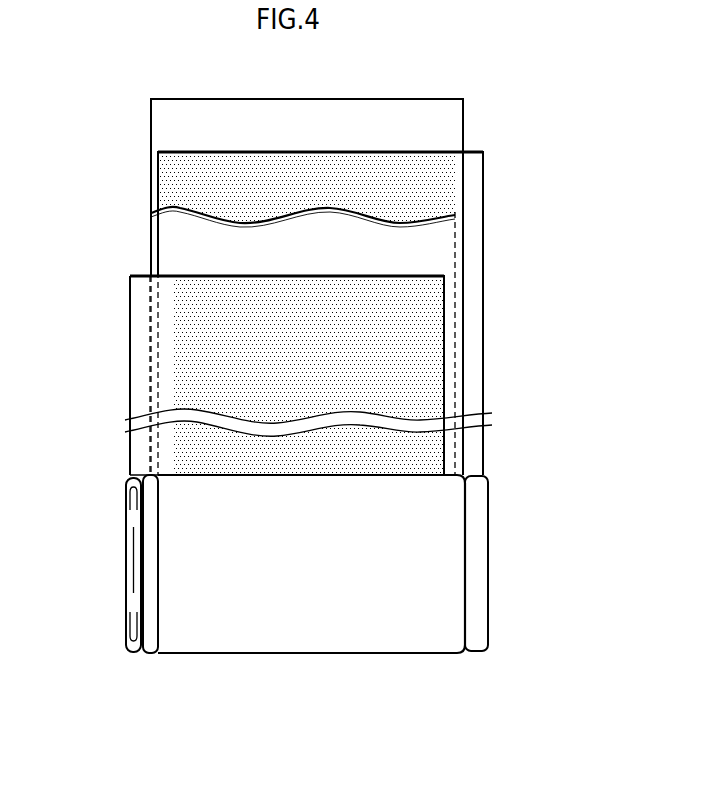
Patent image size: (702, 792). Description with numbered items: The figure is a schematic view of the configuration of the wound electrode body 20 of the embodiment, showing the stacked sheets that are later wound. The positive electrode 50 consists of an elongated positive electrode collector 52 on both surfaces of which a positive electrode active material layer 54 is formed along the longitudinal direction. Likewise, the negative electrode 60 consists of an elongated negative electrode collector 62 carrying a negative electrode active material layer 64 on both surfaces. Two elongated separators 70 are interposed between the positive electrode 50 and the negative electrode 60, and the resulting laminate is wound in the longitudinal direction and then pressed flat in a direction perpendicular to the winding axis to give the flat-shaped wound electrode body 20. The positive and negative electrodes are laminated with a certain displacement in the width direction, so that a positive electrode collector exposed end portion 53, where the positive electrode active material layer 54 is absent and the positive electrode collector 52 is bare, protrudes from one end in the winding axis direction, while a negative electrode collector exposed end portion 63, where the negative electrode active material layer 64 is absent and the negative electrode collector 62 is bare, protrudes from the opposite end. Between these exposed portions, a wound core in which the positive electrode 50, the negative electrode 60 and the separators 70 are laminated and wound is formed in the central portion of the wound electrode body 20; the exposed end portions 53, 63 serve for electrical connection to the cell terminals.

The wound electrode body 20 is at (364, 633).
The positive electrode 50 is at (128, 342).
The positive electrode collector 52 is at (148, 401).
The positive electrode collector exposed end portion 53 is at (148, 374).
The positive electrode active material layer 54 is at (188, 296).
The negative electrode 60 is at (485, 225).
The negative electrode collector 62 is at (486, 320).
The negative electrode collector exposed end portion 63 is at (472, 292).
The negative electrode active material layer 64 is at (452, 177).
The separator 70 is at (170, 120).